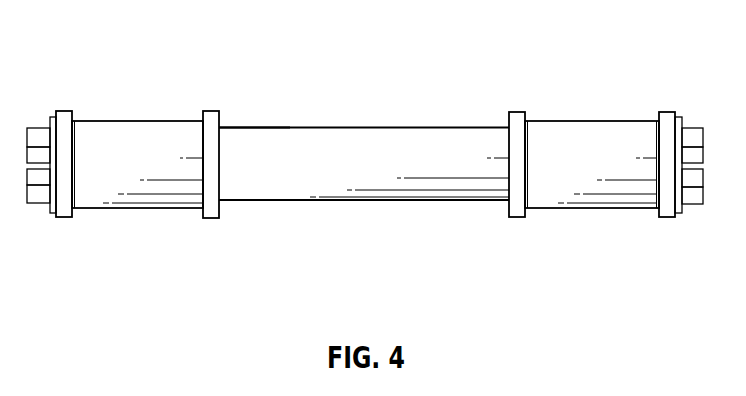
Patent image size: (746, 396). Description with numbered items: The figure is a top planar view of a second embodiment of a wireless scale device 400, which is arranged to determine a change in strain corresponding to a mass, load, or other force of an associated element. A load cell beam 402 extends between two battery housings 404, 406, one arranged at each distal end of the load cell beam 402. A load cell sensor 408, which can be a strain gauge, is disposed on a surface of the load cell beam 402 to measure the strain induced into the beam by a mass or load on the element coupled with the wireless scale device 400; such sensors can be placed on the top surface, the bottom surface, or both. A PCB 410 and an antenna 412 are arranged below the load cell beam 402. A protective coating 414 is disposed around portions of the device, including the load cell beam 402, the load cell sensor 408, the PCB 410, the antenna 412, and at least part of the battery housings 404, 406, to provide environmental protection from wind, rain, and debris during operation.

The wireless scale device 400 is at (118, 53).
The load cell beam 402 is at (453, 200).
The battery housing 404 is at (145, 208).
The battery housing 406 is at (670, 217).
The load cell sensor 408 is at (367, 127).
The PCB 410 is at (270, 200).
The antenna 412 is at (393, 200).
The protective coating 414 is at (268, 127).